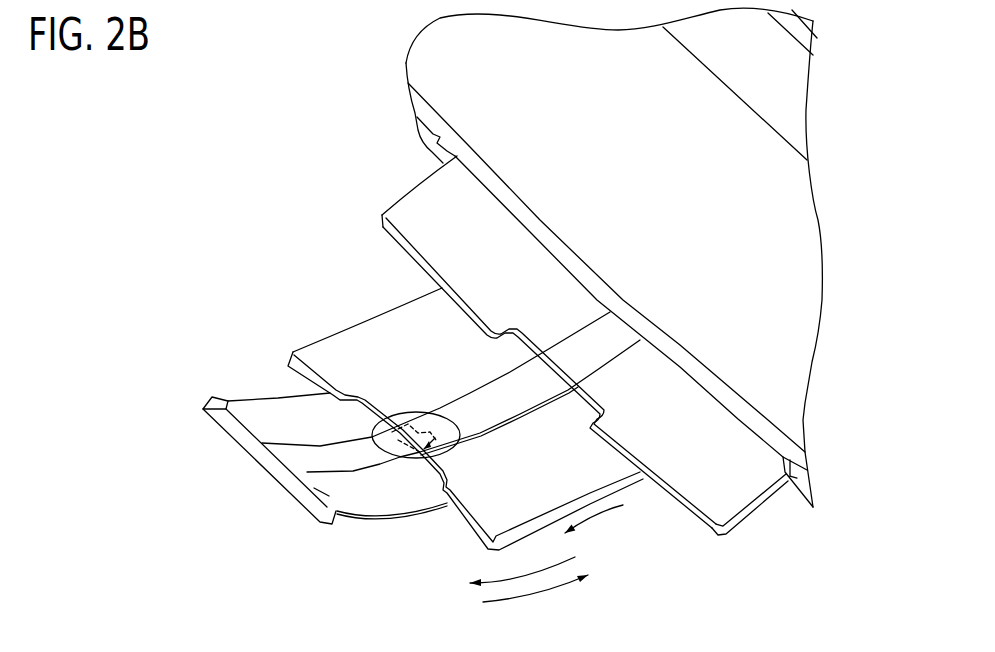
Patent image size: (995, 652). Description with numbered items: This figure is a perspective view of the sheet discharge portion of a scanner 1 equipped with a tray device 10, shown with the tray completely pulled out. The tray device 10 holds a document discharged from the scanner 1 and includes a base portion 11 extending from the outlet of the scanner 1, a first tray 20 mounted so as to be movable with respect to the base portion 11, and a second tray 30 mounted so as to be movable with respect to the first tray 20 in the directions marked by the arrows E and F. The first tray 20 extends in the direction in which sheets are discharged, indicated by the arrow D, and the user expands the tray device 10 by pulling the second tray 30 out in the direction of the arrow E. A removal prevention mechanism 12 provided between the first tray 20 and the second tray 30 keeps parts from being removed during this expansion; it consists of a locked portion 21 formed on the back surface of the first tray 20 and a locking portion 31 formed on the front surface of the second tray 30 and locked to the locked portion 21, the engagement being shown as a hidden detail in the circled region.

The scanner 1 is at (793, 277).
The tray device 10 is at (277, 295).
The base portion 11 is at (415, 188).
The removal prevention mechanism 12 is at (409, 458).
The first tray 20 is at (407, 303).
The locked portion 21 is at (400, 410).
The second tray 30 is at (270, 396).
The locking portion 31 is at (407, 452).